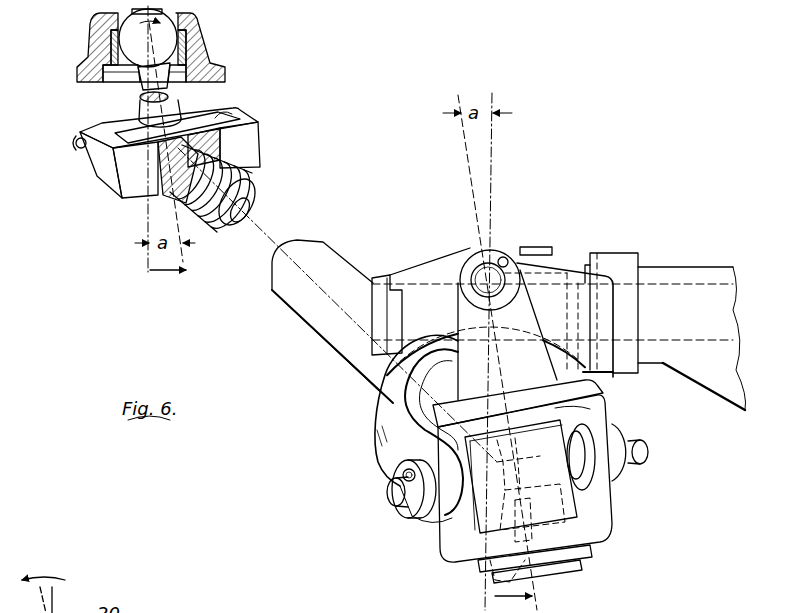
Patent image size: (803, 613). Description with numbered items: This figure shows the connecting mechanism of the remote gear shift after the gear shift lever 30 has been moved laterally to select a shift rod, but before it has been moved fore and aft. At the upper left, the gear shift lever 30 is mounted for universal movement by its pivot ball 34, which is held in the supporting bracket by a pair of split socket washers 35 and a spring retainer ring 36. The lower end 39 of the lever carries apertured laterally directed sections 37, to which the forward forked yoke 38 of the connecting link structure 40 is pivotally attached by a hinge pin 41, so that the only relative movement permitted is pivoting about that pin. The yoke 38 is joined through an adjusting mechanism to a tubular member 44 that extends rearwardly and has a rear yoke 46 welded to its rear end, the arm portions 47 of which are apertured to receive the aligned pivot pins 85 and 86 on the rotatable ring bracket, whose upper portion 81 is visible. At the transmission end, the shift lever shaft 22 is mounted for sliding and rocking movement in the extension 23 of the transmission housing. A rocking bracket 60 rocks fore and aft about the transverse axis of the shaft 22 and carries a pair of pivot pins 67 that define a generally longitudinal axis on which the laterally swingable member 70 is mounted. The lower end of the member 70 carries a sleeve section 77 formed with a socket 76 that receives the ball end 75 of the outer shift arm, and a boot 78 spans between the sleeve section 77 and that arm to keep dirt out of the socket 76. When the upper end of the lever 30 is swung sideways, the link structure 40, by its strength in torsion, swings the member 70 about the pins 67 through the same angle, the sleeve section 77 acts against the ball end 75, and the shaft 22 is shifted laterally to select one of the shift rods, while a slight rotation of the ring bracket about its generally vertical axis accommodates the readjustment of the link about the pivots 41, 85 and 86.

The gear shift lever 30 is at (133, 13).
The pivot ball 34 is at (174, 38).
The split socket washers 35 is at (111, 44).
The spring retainer ring 36 is at (110, 83).
The apertured laterally directed sections 37 is at (108, 125).
The forward forked yoke 38 is at (100, 163).
The lower end of the gear shift lever 39 is at (146, 83).
The connecting link structure 40 is at (264, 292).
The hinge pin 41 is at (74, 148).
The tubular member 44 is at (250, 200).
The rear yoke 46 is at (386, 434).
The arm portions 47 is at (622, 471).
The rocking bracket 60 is at (430, 259).
The pivot pins 67 is at (498, 262).
The laterally swingable member 70 is at (455, 311).
The shift lever shaft 22 is at (372, 298).
The extension of the transmission housing 23 is at (708, 263).
The upper portion of the bracket 81 is at (592, 409).
The pivot pin 85 is at (388, 487).
The pivot pin 86 is at (648, 454).
The boot 78 is at (484, 500).
The socket 76 is at (583, 551).
The sleeve section 77 is at (555, 575).
The ball end 75 is at (490, 567).